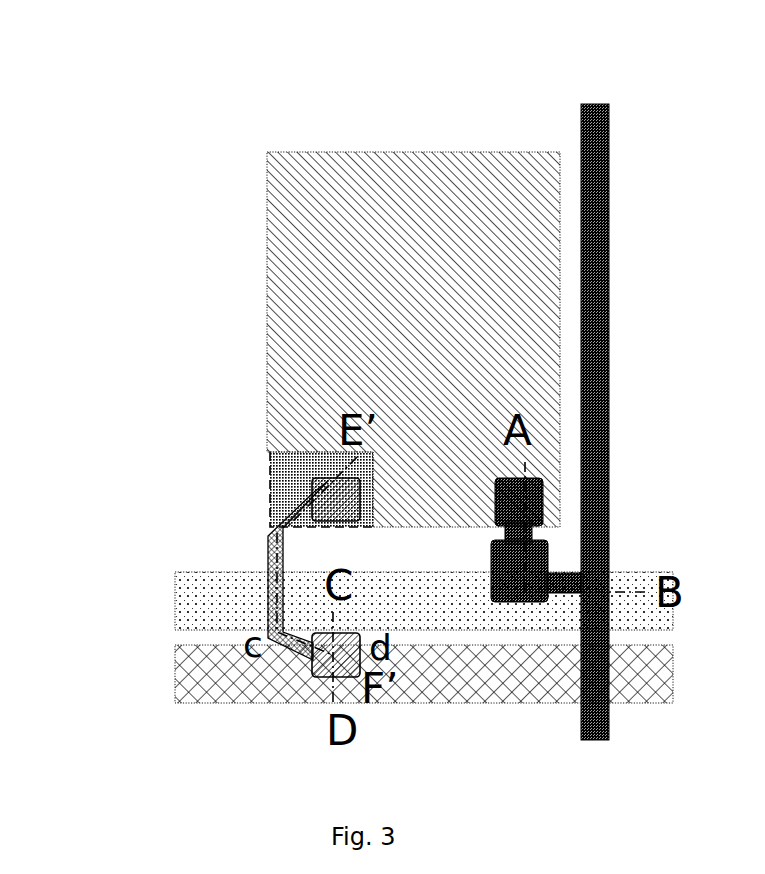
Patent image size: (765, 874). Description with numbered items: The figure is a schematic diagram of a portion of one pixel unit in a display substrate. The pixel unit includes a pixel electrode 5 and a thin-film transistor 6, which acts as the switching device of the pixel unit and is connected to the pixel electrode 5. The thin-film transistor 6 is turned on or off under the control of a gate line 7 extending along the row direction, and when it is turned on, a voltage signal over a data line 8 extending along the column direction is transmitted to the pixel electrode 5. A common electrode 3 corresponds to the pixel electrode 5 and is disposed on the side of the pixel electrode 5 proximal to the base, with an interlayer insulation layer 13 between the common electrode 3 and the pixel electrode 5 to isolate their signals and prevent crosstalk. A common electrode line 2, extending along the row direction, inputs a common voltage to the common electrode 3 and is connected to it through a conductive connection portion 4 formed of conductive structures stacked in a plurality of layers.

The common electrode line 2 is at (175, 673).
The common electrode 3 is at (322, 497).
The conductive connection portion 4 is at (268, 547).
The pixel electrode 5 is at (305, 152).
The thin-film transistor 6 is at (502, 600).
The gate line 7 is at (175, 600).
The data line 8 is at (595, 104).
The interlayer insulation layer 13 is at (272, 482).